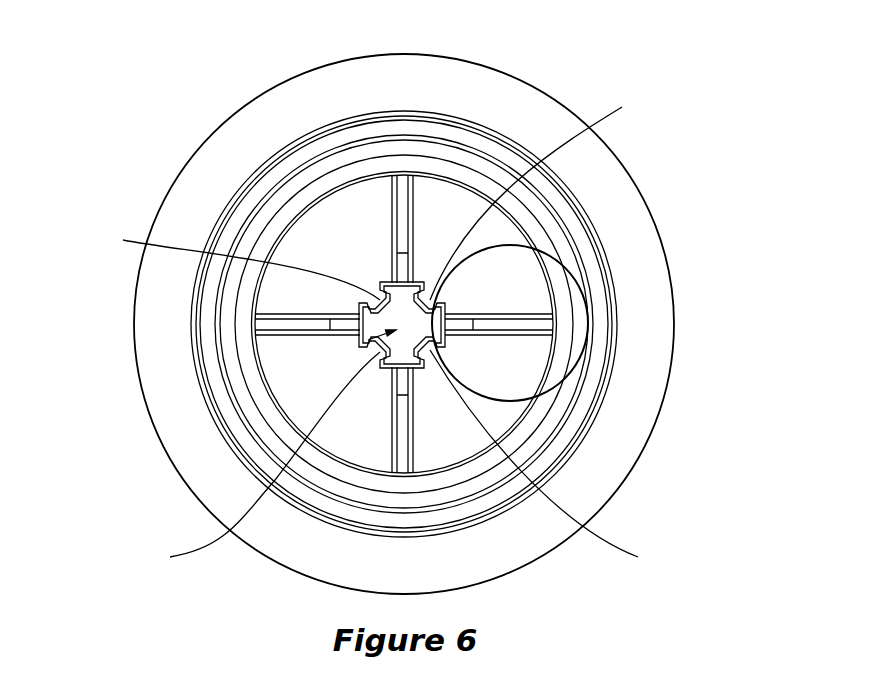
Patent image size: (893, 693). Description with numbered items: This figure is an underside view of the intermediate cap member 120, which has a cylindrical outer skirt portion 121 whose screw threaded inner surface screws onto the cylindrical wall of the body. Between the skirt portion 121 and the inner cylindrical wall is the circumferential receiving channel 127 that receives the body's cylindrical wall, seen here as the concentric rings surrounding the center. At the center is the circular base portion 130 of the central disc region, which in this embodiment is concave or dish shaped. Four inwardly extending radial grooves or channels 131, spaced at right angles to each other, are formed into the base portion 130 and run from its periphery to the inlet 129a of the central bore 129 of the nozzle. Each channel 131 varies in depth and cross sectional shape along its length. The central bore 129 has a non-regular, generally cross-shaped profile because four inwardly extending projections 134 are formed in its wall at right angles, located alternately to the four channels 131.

The intermediate cap member 120 is at (566, 92).
The skirt portion 121 is at (170, 375).
The circumferential receiving channel 127 is at (233, 220).
The central bore 129 is at (400, 310).
The inlet 129a is at (368, 340).
The base portion 130 is at (348, 237).
The radial grooves or channels 131 is at (406, 230).
The inwardly extending projections 134 is at (380, 331).